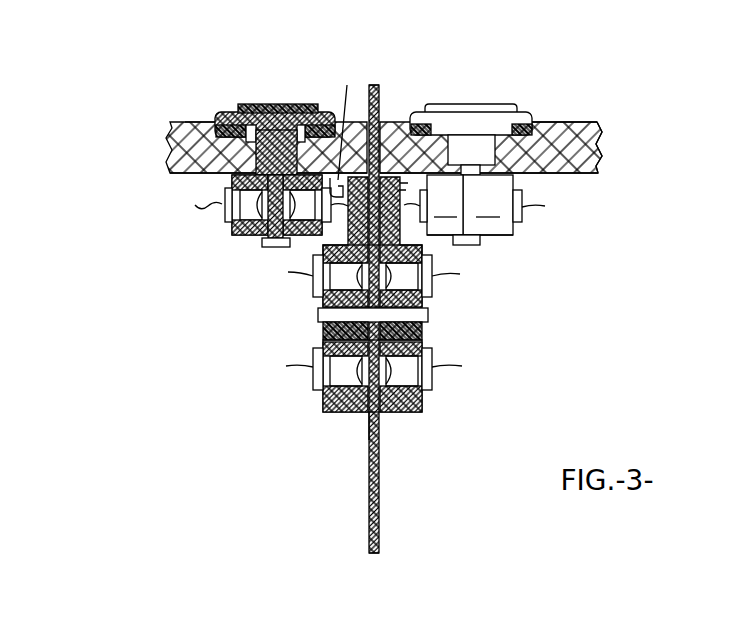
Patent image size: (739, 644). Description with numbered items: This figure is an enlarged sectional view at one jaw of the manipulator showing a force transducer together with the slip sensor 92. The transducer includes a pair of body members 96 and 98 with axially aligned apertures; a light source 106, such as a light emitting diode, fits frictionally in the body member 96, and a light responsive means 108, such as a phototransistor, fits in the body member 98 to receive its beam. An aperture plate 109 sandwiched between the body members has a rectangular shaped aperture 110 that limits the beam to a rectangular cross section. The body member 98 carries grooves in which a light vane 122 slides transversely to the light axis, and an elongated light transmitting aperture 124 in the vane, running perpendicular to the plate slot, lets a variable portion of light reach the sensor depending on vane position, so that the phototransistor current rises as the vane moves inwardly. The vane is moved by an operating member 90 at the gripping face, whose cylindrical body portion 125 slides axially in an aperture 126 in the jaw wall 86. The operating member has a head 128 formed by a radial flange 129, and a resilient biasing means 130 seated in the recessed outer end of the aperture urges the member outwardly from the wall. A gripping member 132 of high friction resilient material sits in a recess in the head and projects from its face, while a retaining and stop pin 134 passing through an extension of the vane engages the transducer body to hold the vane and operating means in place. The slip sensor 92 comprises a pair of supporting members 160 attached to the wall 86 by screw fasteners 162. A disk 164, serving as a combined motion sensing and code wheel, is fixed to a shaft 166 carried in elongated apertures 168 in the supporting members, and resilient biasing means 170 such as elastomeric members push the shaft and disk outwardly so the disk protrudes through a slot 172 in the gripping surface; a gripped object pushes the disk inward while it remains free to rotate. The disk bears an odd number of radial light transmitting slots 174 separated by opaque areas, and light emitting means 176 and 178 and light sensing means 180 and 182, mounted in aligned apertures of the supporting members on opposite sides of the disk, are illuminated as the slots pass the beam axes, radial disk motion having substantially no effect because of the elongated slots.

The wall 86 is at (590, 167).
The operating member 90 is at (331, 100).
The slip sensor 92 is at (347, 506).
The body member 96 is at (255, 237).
The body member 98 is at (425, 148).
The light source 106 is at (230, 220).
The light responsive means 108 is at (313, 276).
The aperture plate 109 is at (230, 188).
The rectangular shaped aperture 110 is at (225, 215).
The light vane 122 is at (262, 240).
The light transmitting aperture 124 is at (205, 204).
The body portion 125 is at (175, 150).
The aperture 126 is at (235, 175).
The head 128 is at (281, 112).
The radial flange 129 is at (233, 124).
The resilient biasing means 130 is at (190, 123).
The gripping member 132 is at (258, 104).
The retaining and stop pin 134 is at (265, 243).
The supporting member 160 is at (340, 412).
The screw fastener 162 is at (350, 178).
The disk 164 is at (379, 497).
The shaft 166 is at (305, 350).
The elongated aperture 168 is at (318, 352).
The resilient biasing means 170 is at (423, 330).
The slot 172 is at (379, 128).
The slot 174 is at (380, 405).
The light emitting means 176 is at (323, 330).
The light emitting means 178 is at (343, 415).
The light sensing means 180 is at (433, 296).
The light sensing means 182 is at (432, 387).